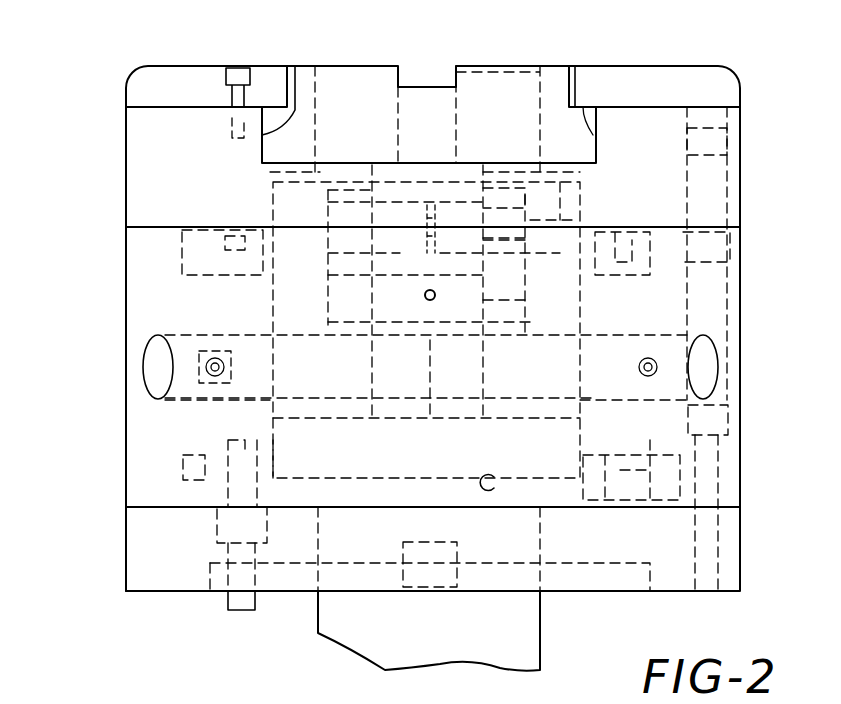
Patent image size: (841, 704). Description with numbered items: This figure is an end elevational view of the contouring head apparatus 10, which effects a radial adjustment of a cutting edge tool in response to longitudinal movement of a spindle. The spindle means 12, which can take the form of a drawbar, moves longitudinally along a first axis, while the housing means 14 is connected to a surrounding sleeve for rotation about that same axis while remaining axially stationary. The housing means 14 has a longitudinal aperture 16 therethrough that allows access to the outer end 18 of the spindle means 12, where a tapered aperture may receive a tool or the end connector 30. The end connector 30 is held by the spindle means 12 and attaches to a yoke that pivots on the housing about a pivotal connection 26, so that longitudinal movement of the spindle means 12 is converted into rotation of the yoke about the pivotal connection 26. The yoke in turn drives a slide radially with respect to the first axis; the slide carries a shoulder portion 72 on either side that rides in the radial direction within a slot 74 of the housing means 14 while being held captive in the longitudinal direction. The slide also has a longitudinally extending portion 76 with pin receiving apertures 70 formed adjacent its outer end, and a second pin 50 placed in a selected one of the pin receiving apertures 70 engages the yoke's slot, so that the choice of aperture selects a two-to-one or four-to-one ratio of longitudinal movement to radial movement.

The contouring head apparatus 10 is at (57, 160).
The spindle means 12 is at (548, 632).
The housing means 14 is at (112, 283).
The longitudinal aperture 16 is at (318, 108).
The outer end 18 is at (492, 472).
The pivotal connection 26 is at (138, 367).
The end connector 30 is at (432, 478).
The second pin 50 is at (347, 277).
The pin receiving apertures 70 is at (415, 207).
The shoulder portion 72 is at (266, 107).
The slot 74 is at (262, 137).
The longitudinally extending portion 76 is at (487, 295).